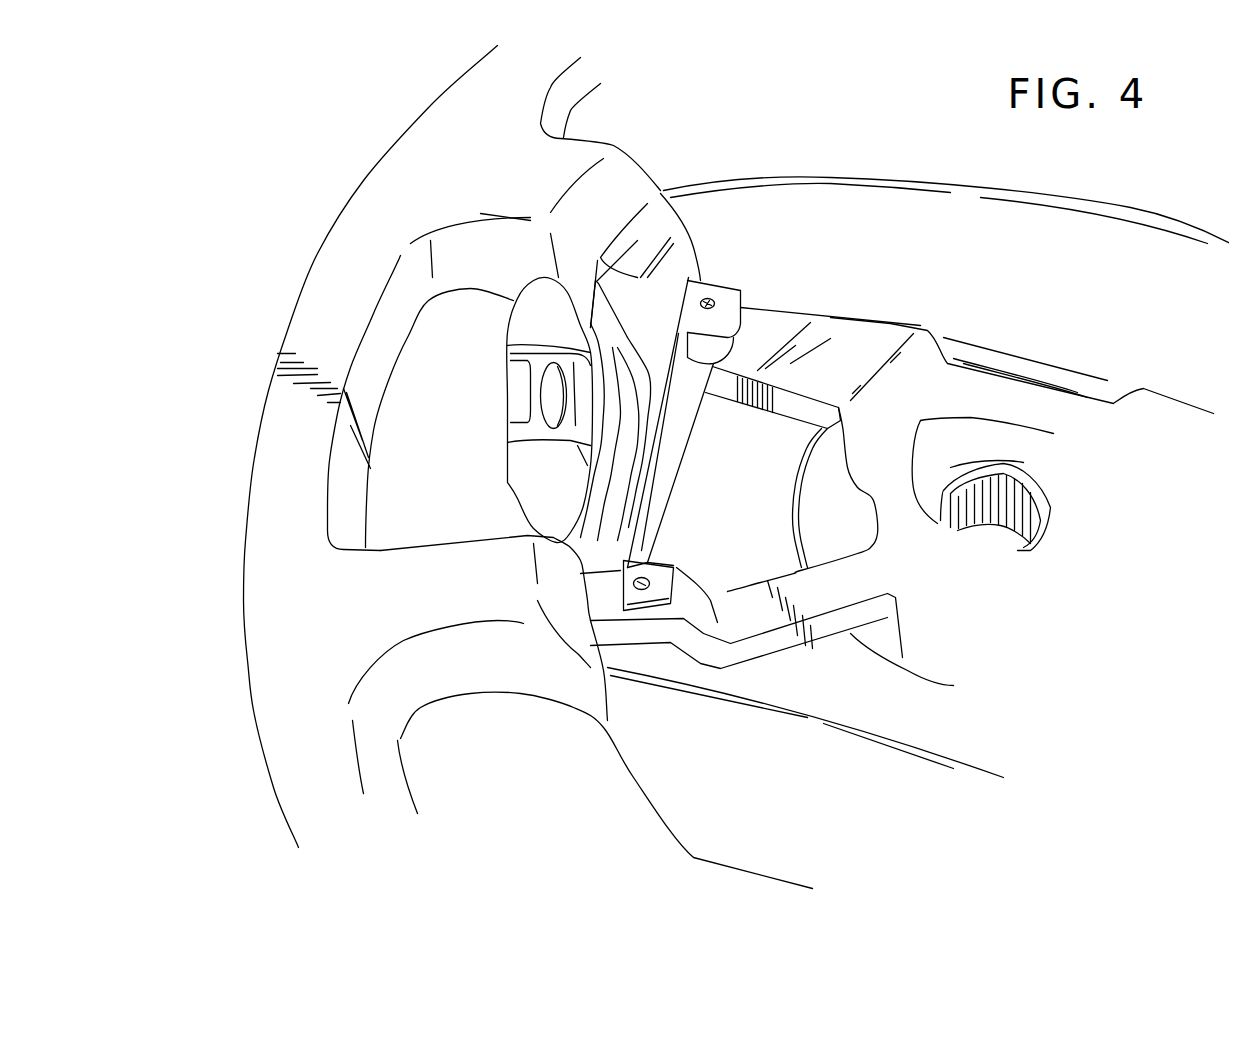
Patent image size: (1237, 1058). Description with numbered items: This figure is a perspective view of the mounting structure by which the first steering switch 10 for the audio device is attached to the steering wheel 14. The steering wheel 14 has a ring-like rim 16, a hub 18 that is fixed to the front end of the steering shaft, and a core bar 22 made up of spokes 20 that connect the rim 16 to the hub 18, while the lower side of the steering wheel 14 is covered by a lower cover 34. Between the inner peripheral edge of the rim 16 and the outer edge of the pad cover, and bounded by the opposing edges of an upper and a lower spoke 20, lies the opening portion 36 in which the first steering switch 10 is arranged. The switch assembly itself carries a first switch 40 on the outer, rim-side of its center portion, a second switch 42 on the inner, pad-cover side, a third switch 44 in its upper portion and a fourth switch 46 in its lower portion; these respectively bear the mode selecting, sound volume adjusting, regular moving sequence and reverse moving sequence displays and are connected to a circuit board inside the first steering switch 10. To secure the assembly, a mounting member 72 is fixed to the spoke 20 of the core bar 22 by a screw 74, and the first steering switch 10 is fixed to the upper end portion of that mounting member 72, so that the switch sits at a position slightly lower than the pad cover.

The first steering switch 10 is at (510, 493).
The steering wheel 14 is at (263, 767).
The rim 16 is at (280, 700).
The hub 18 is at (995, 397).
The spokes 20 is at (813, 317).
The core bar 22 is at (890, 322).
The lower cover 34 is at (660, 778).
The opening portion 36 is at (427, 540).
The first switch 40 is at (510, 397).
The second switch 42 is at (540, 350).
The third switch 44 is at (523, 317).
The fourth switch 46 is at (537, 460).
The mounting member 72 is at (643, 480).
The screw 74 is at (710, 298).